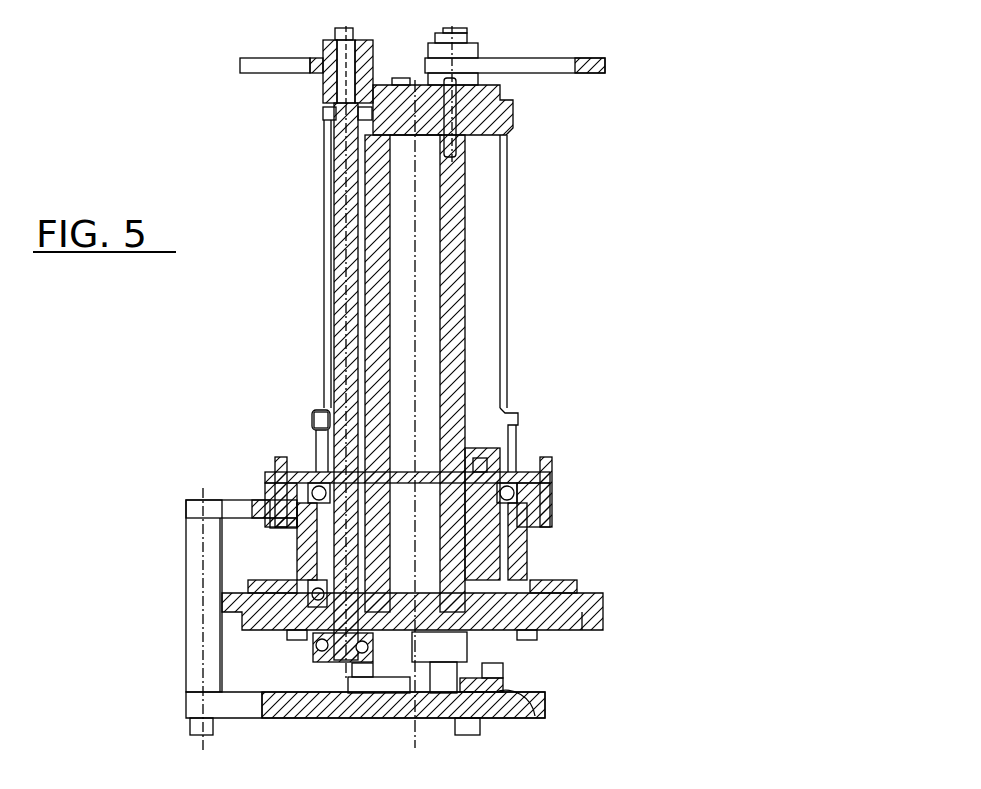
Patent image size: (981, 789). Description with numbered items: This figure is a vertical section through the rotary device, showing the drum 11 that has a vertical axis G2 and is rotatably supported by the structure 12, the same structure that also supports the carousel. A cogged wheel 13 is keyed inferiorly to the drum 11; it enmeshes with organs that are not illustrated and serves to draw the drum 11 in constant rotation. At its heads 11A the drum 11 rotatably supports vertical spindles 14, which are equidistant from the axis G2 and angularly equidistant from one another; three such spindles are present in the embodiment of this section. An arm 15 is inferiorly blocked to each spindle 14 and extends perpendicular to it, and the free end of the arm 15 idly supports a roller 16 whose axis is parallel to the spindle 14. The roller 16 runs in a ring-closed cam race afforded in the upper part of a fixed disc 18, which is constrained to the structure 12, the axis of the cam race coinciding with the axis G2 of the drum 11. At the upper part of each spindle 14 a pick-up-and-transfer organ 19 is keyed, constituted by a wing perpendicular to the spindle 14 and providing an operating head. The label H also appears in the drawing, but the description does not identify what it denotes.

The pick-up-and-transfer organ 19 is at (258, 48).
The head 11A is at (505, 113).
The drum 11 is at (517, 187).
The vertical axis G2 is at (422, 245).
The vertical spindle 14 is at (322, 410).
The structure 12 is at (558, 480).
The cogged wheel 13 is at (590, 600).
The base H is at (548, 684).
The arm 15 is at (530, 720).
The roller 16 is at (488, 707).
The fixed disc 18 is at (292, 708).